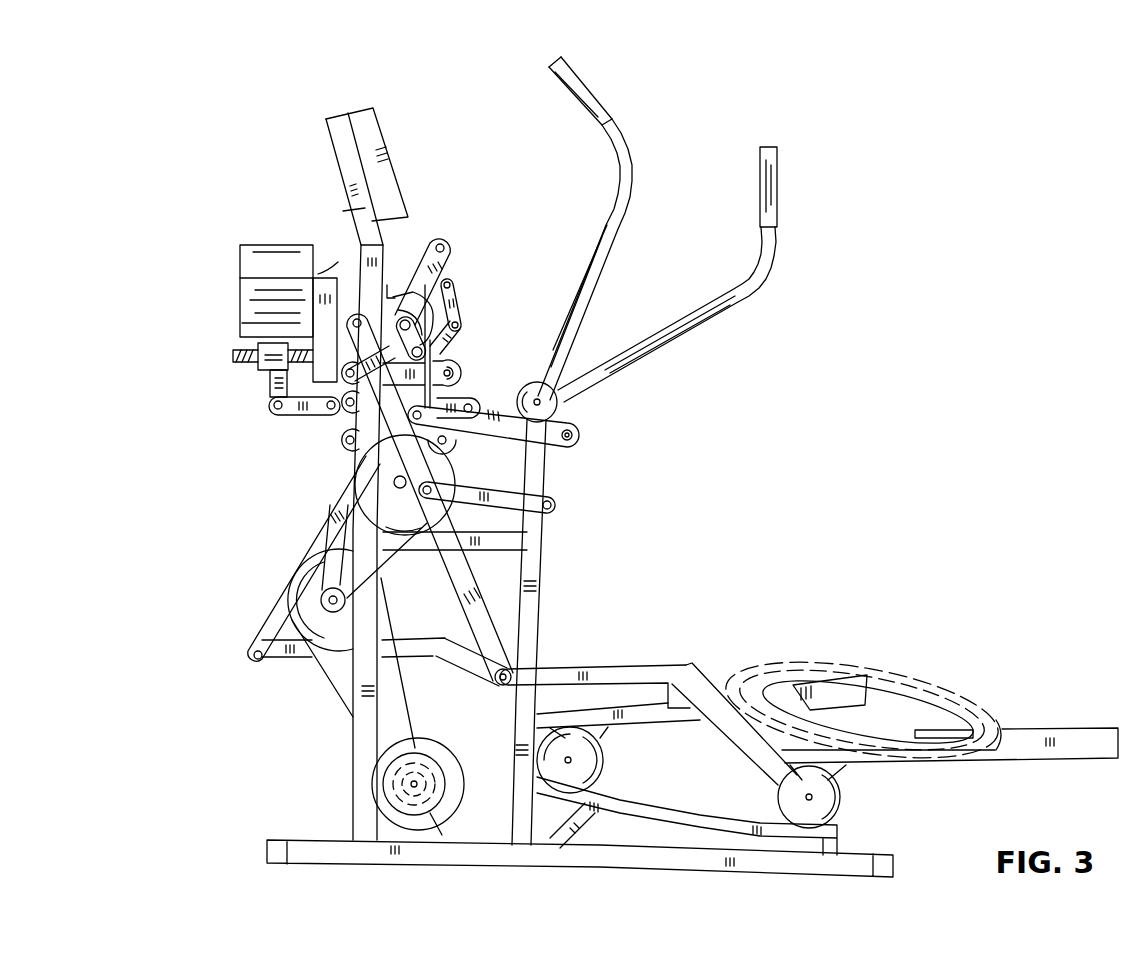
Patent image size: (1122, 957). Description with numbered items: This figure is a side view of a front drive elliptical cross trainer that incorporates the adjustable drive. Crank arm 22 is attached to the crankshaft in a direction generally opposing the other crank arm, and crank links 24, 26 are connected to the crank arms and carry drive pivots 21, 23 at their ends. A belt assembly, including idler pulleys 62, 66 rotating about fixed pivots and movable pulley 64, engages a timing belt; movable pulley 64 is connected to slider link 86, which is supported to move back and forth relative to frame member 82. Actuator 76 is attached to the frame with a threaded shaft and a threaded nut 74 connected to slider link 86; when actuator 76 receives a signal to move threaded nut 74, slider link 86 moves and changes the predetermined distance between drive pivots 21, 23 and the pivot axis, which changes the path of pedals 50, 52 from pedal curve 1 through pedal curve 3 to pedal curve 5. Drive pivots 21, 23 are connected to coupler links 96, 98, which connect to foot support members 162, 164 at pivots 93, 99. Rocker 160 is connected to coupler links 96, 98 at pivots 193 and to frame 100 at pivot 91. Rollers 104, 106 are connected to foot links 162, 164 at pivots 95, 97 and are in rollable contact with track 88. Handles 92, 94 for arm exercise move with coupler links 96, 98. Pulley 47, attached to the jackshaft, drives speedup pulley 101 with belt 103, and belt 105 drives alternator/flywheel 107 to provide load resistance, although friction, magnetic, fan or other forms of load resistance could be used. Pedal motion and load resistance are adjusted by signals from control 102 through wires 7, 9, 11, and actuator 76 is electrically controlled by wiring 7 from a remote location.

The pedal curve 1 is at (823, 683).
The pedal curve 3 is at (882, 685).
The pedal curve 5 is at (913, 678).
The wiring 7 is at (337, 262).
The wire 9 is at (352, 210).
The wire 11 is at (442, 835).
The drive pivot 21 is at (352, 322).
The crank arm 22 is at (445, 271).
The drive pivot 23 is at (458, 327).
The crank link 24 is at (360, 380).
The crank link 26 is at (460, 300).
The pulley 47 is at (362, 472).
The pedal 50 is at (1020, 726).
The pedal 52 is at (715, 683).
The idler pulley 62 is at (455, 360).
The movable pulley 64 is at (465, 397).
The idler pulley 66 is at (452, 453).
The threaded nut 74 is at (262, 370).
The actuator 76 is at (284, 245).
The frame member 82 is at (385, 260).
The slider link 86 is at (292, 416).
The track 88 is at (648, 802).
The pivot 91 is at (579, 431).
The handle 92 is at (616, 127).
The pivot 93 is at (517, 667).
The handle 94 is at (752, 284).
The pivot 95 is at (812, 798).
The coupler link 96 is at (452, 580).
The pivot 97 is at (573, 760).
The coupler link 98 is at (313, 542).
The pivot 99 is at (256, 661).
The frame 100 is at (323, 840).
The speedup pulley 101 is at (300, 597).
The control 102 is at (380, 112).
The belt 103 is at (338, 523).
The roller 104 is at (836, 807).
The belt 105 is at (327, 678).
The roller 106 is at (603, 768).
The alternator/flywheel 107 is at (433, 758).
The rocker 160 is at (503, 434).
The foot support member 162 is at (577, 668).
The foot support member 164 is at (460, 680).
The pivot 193 is at (456, 441).